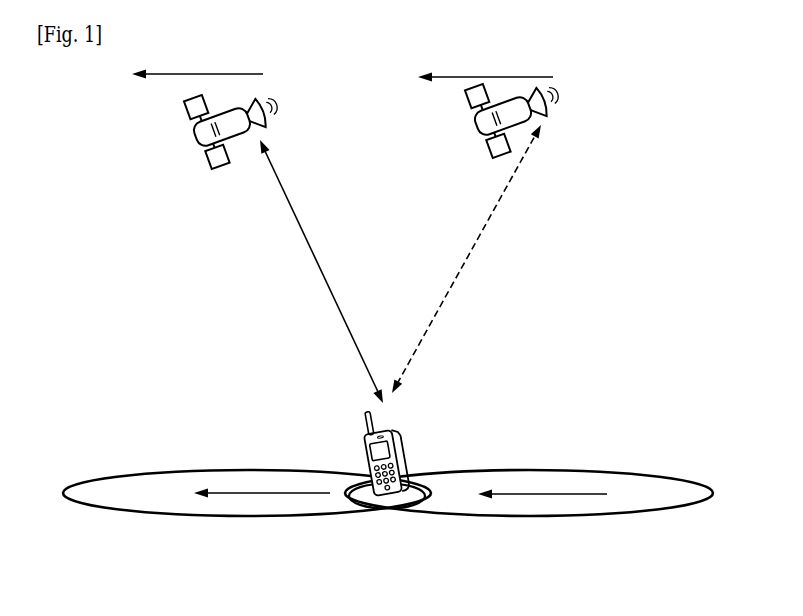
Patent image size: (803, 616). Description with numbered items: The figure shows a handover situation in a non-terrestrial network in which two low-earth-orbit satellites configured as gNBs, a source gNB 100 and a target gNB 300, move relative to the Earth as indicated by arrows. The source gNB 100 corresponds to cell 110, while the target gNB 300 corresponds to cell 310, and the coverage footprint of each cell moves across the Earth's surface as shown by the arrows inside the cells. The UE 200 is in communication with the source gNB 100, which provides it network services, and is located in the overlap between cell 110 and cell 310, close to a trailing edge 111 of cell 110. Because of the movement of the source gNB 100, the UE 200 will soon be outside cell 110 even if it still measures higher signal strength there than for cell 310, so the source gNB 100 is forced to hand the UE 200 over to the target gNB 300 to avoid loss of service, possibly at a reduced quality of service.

The source satellite gNB 100 is at (184, 135).
The target satellite gNB 300 is at (474, 137).
The UE 200 is at (369, 428).
The cell 110 is at (124, 477).
The cell 310 is at (655, 478).
The trailing edge 111 is at (418, 513).